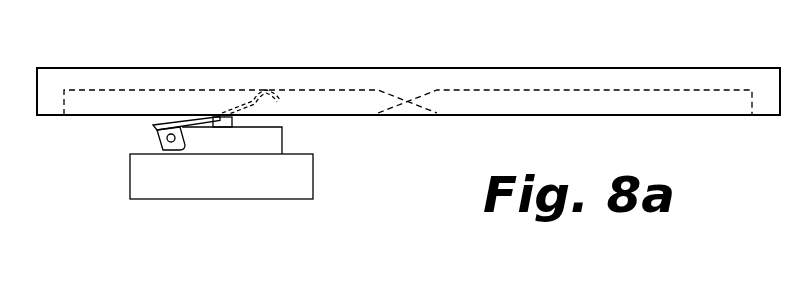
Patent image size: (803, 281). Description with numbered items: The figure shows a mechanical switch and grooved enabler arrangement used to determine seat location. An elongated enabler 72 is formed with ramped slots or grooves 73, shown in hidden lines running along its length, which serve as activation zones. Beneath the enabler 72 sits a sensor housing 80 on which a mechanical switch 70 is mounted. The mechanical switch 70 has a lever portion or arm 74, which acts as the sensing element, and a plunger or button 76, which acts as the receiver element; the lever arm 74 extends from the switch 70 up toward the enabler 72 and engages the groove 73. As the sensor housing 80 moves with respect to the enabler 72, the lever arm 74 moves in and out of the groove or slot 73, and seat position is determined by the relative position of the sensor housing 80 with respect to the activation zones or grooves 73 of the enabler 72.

The mechanical switch 70 is at (213, 145).
The enabler 72 is at (477, 82).
The ramped slots or grooves 73 is at (134, 88).
The lever arm 74 is at (264, 84).
The plunger or button 76 is at (220, 116).
The sensor housing 80 is at (302, 173).